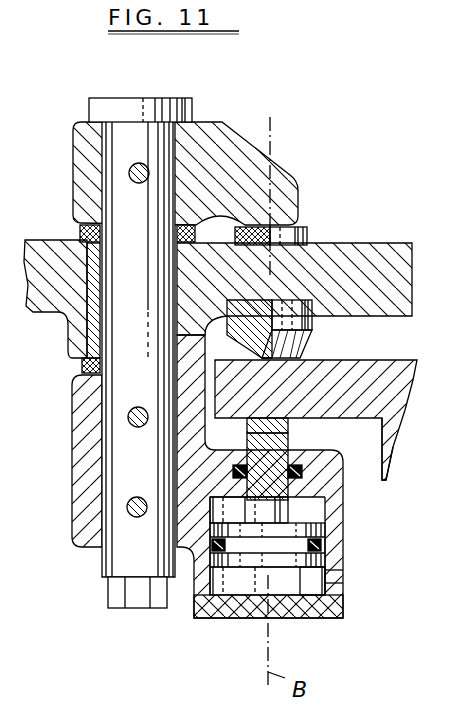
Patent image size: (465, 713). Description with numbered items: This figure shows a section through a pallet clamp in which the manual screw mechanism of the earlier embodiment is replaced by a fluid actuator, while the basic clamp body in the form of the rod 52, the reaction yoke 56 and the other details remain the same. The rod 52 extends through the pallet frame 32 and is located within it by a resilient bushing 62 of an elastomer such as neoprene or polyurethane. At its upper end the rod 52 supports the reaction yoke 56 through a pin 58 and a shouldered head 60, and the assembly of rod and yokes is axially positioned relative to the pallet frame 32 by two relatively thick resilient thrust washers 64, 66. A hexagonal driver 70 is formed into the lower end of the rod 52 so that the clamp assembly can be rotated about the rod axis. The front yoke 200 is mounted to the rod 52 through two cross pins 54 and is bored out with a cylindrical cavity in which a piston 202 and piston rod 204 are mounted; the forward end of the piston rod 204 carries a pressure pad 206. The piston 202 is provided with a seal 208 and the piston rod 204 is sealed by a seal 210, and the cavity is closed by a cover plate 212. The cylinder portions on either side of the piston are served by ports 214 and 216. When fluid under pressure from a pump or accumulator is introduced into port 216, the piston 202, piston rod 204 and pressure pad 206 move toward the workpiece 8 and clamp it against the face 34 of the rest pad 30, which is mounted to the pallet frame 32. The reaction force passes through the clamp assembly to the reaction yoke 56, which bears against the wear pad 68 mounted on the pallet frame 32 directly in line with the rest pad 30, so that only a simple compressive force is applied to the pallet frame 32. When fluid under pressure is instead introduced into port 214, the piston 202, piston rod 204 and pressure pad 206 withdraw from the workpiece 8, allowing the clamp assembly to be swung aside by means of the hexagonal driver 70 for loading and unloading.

The workpiece 8 is at (395, 448).
The rest pad 30 is at (312, 328).
The pallet frame 32 is at (388, 242).
The surface 34 is at (300, 348).
The rod 52 is at (110, 565).
The cross pins 54 is at (128, 417).
The reaction yoke 56 is at (73, 151).
The pin 58 is at (129, 177).
The shouldered head 60 is at (192, 110).
The resilient bushing 62 is at (93, 340).
The resilient thrust washer 64 is at (82, 367).
The resilient thrust washer 66 is at (80, 233).
The wear pad 68 is at (308, 237).
The hexagonal driver 70 is at (138, 602).
The front yoke 200 is at (340, 555).
The piston 202 is at (326, 530).
The piston rod 204 is at (290, 443).
The pressure pad 206 is at (292, 428).
The seal 208 is at (317, 570).
The seal 210 is at (300, 473).
The cover plate 212 is at (237, 618).
The port 214 is at (345, 518).
The port 216 is at (340, 585).